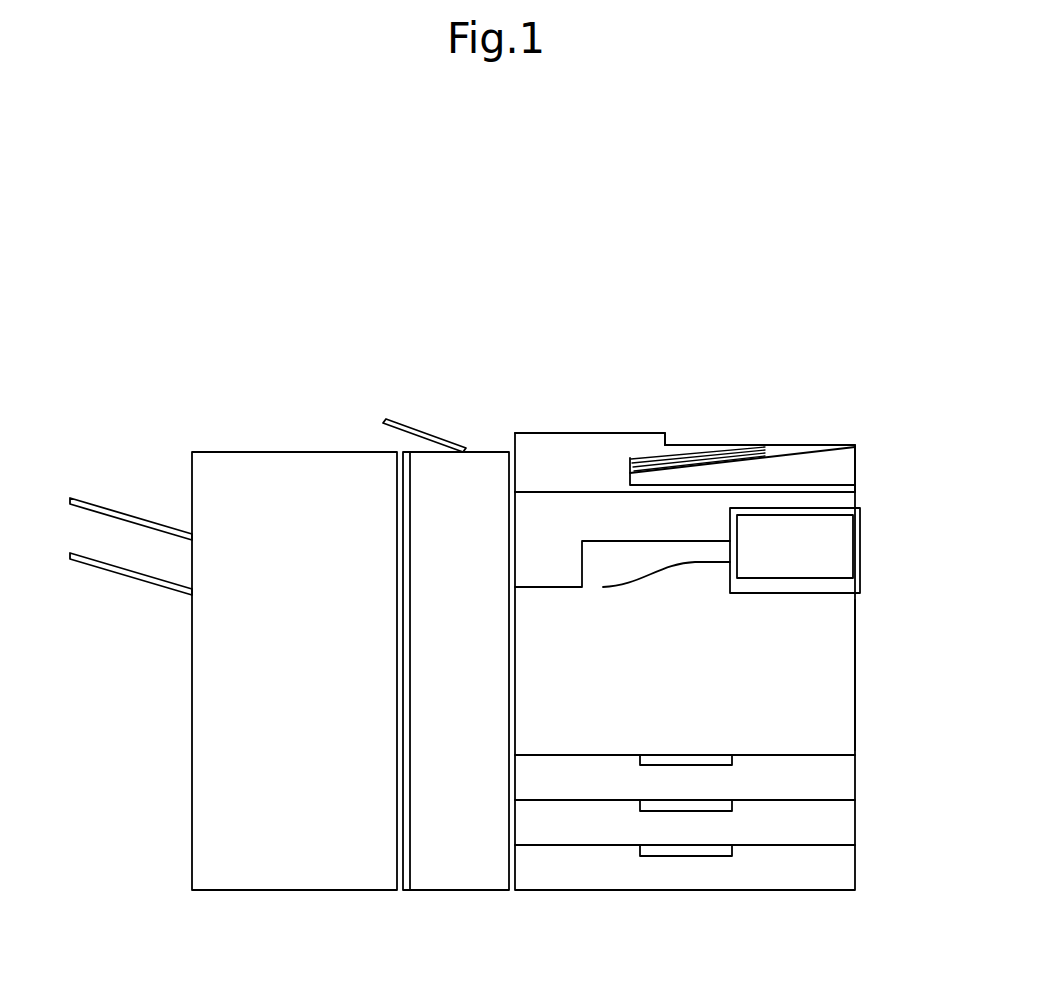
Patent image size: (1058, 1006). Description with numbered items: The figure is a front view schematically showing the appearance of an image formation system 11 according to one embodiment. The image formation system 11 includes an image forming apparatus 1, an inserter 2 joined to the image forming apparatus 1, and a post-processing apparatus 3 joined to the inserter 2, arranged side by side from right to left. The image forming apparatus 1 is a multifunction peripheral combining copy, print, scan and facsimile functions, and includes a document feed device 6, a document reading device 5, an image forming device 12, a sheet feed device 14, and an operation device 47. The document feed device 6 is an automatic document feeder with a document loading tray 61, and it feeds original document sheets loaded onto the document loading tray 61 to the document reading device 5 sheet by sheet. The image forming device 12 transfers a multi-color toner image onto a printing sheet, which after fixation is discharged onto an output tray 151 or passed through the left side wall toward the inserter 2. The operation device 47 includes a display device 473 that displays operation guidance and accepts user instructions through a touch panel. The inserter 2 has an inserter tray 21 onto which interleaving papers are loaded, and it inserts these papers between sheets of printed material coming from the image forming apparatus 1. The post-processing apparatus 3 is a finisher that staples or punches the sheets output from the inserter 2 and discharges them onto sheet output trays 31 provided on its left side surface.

The image forming apparatus 1 is at (695, 891).
The inserter 2 is at (462, 891).
The post-processing apparatus 3 is at (285, 891).
The document reading device 5 is at (845, 500).
The document feed device 6 is at (578, 433).
The image formation system 11 is at (518, 328).
The image forming device 12 is at (848, 648).
The sheet feed device 14 is at (845, 875).
The inserter tray 21 is at (416, 432).
The sheet output trays 31 is at (123, 567).
The operation device 47 is at (860, 573).
The document loading tray 61 is at (788, 455).
The output tray 151 is at (604, 587).
The display device 473 is at (838, 542).